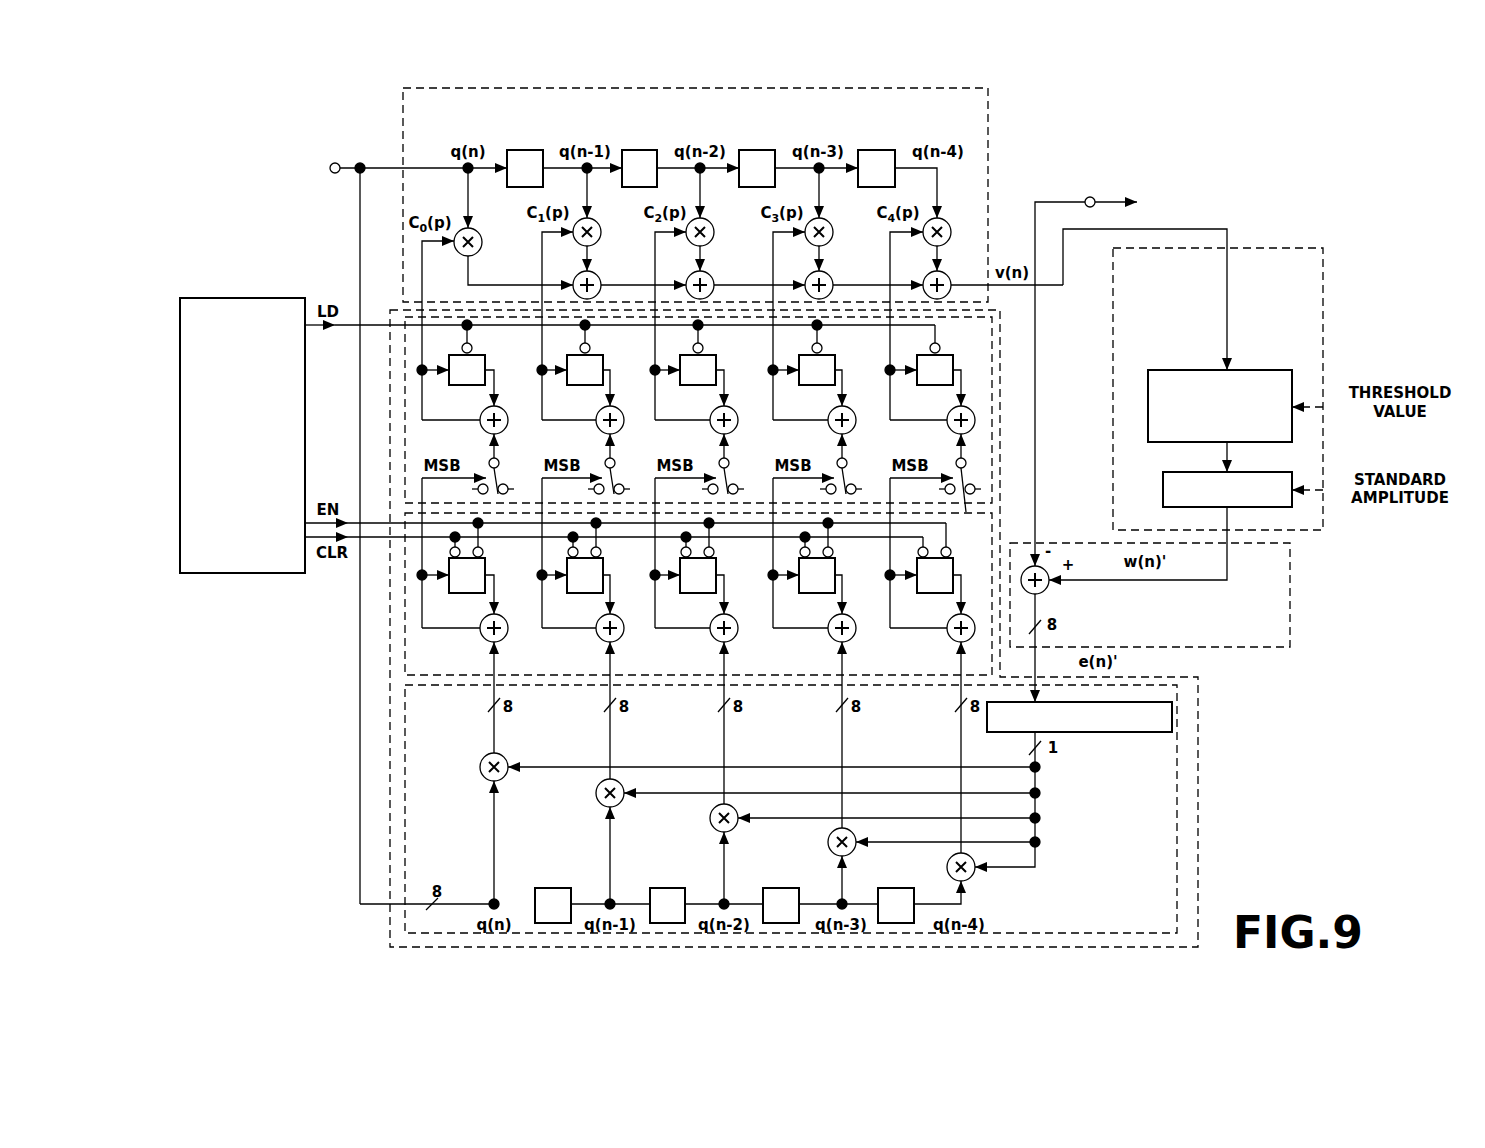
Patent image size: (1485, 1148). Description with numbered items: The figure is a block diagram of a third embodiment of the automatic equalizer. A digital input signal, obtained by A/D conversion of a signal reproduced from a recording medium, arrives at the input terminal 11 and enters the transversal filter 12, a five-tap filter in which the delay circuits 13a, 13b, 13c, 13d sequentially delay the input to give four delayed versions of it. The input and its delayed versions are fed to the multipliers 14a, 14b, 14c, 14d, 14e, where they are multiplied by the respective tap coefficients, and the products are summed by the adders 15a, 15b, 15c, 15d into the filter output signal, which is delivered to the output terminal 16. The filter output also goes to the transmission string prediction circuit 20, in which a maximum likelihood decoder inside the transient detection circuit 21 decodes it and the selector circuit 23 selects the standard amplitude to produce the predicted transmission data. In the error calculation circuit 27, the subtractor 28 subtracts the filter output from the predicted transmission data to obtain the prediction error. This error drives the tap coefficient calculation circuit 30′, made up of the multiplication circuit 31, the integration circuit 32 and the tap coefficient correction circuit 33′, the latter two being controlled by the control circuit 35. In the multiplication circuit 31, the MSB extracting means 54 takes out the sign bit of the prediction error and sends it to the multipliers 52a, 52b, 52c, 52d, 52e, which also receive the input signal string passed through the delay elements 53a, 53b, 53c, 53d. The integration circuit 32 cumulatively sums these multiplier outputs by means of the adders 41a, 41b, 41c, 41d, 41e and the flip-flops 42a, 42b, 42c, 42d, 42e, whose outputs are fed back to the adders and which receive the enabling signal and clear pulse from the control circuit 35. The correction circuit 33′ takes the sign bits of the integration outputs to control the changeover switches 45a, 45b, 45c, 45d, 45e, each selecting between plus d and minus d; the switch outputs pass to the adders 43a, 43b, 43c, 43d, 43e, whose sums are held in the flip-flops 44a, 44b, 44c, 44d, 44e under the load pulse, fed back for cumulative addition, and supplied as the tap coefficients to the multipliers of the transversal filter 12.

The input terminal 11 is at (335, 163).
The transversal filter 12 is at (990, 150).
The delay circuit 13a is at (525, 150).
The delay circuit 13b is at (640, 150).
The delay circuit 13c is at (757, 150).
The delay circuit 13d is at (876, 150).
The multiplier 14a is at (461, 254).
The multiplier 14b is at (598, 225).
The multiplier 14c is at (711, 225).
The multiplier 14d is at (830, 225).
The multiplier 14e is at (947, 222).
The adder 15a is at (598, 278).
The adder 15b is at (711, 278).
The adder 15c is at (830, 278).
The adder 15d is at (948, 278).
The output terminal 16 is at (1090, 197).
The transmission string prediction circuit 20 is at (1300, 248).
The transient detection circuit 21 is at (1175, 370).
The selector circuit 23 is at (1163, 489).
The error calculation circuit 27 is at (1080, 543).
The subtractor 28 is at (1028, 568).
The tap coefficient calculation circuit 30′ is at (1198, 868).
The multiplication circuit 31 is at (1178, 772).
The integration circuit 32 is at (405, 657).
The tap coefficient correction circuit 33′ is at (995, 437).
The control circuit 35 is at (237, 573).
The adder 41a is at (481, 637).
The adder 41b is at (597, 638).
The adder 41c is at (711, 638).
The adder 41d is at (829, 638).
The adder 41e is at (971, 639).
The flip-flop 42a is at (486, 578).
The flip-flop 42b is at (604, 578).
The flip-flop 42c is at (717, 578).
The flip-flop 42d is at (836, 577).
The flip-flop 42e is at (922, 594).
The adder 43a is at (482, 416).
The adder 43b is at (598, 416).
The adder 43c is at (712, 416).
The adder 43d is at (830, 416).
The adder 43e is at (949, 416).
The flip-flop 44a is at (486, 366).
The flip-flop 44b is at (604, 366).
The flip-flop 44c is at (717, 366).
The flip-flop 44d is at (836, 366).
The flip-flop 44e is at (954, 364).
The changeover switch 45a is at (494, 491).
The changeover switch 45b is at (611, 491).
The changeover switch 45c is at (724, 491).
The changeover switch 45d is at (842, 490).
The changeover switch 45e is at (959, 499).
The multiplier 52a is at (505, 757).
The multiplier 52b is at (596, 797).
The multiplier 52c is at (710, 818).
The multiplier 52d is at (828, 842).
The multiplier 52e is at (946, 872).
The delay element 53a is at (553, 888).
The delay element 53b is at (667, 888).
The delay element 53c is at (781, 888).
The delay element 53d is at (896, 888).
The MSB extracting means 54 is at (1108, 733).